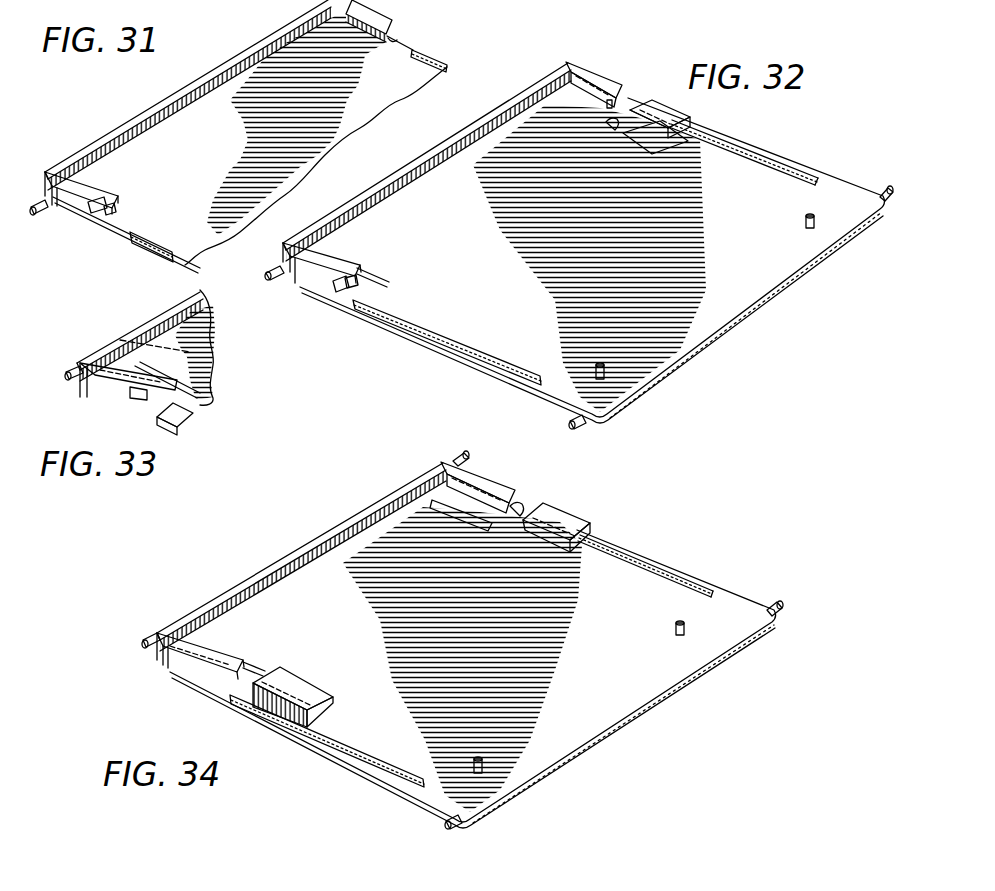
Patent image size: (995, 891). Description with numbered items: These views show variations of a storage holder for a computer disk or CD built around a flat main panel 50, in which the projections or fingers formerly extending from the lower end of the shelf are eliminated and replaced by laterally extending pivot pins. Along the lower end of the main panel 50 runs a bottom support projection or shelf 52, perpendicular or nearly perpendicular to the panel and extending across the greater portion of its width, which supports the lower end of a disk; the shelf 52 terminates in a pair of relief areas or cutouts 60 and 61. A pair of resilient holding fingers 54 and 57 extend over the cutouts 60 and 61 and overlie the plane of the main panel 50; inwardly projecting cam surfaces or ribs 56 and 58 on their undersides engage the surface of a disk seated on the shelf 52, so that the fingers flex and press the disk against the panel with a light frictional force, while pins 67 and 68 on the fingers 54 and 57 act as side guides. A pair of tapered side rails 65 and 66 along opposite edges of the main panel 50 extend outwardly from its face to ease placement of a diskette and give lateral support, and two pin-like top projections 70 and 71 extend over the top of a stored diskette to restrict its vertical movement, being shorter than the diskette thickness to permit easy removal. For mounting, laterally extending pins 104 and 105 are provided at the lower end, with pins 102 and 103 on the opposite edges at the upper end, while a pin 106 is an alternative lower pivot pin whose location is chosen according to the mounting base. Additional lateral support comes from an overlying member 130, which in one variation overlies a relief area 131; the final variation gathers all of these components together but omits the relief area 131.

In FIG. 31, the main panel 50 is at (320, 135).
In FIG. 32, the main panel 50 is at (707, 320).
In FIG. 33, the main panel 50 is at (210, 360).
In FIG. 34, the main panel 50 is at (596, 730).
In FIG. 31, the bottom support projection or shelf 52 is at (127, 137).
In FIG. 32, the bottom support projection or shelf 52 is at (338, 212).
In FIG. 33, the bottom support projection or shelf 52 is at (140, 337).
In FIG. 34, the bottom support projection or shelf 52 is at (277, 563).
In FIG. 32, the resilient holding finger 54 is at (590, 78).
In FIG. 34, the resilient holding finger 54 is at (487, 487).
In FIG. 31, the cam surface or rib 56 is at (367, 42).
In FIG. 31, the resilient holding finger 57 is at (107, 187).
In FIG. 32, the resilient holding finger 57 is at (312, 265).
In FIG. 33, the resilient holding finger 57 is at (130, 387).
In FIG. 34, the resilient holding finger 57 is at (207, 673).
In FIG. 31, the cam surface or rib 58 is at (127, 202).
In FIG. 32, the cam surface or rib 58 is at (352, 287).
In FIG. 33, the cam surface or rib 58 is at (140, 400).
In FIG. 32, the relief area or cutout 60 is at (616, 120).
In FIG. 34, the relief area or cutout 60 is at (513, 507).
In FIG. 32, the relief area or cutout 61 is at (372, 280).
In FIG. 33, the relief area or cutout 61 is at (187, 403).
In FIG. 34, the relief area or cutout 61 is at (230, 693).
In FIG. 31, the tapered side rail 65 is at (443, 58).
In FIG. 32, the tapered side rail 65 is at (787, 158).
In FIG. 34, the tapered side rail 65 is at (653, 560).
In FIG. 31, the tapered side rail 66 is at (157, 240).
In FIG. 32, the tapered side rail 66 is at (482, 362).
In FIG. 34, the tapered side rail 66 is at (385, 773).
In FIG. 31, the pin 67 is at (395, 40).
In FIG. 31, the pin 68 is at (83, 227).
In FIG. 32, the pin 68 is at (342, 283).
In FIG. 33, the pin 68 is at (157, 407).
In FIG. 32, the pin-like top projection 70 is at (805, 223).
In FIG. 34, the pin-like top projection 70 is at (677, 628).
In FIG. 32, the pin-like top projection 71 is at (601, 366).
In FIG. 34, the pin-like top projection 71 is at (480, 757).
In FIG. 34, the pivot pin 102 is at (453, 827).
In FIG. 34, the pivot pin 103 is at (773, 603).
In FIG. 31, the pivot pin 104 is at (35, 212).
In FIG. 32, the pivot pin 104 is at (268, 274).
In FIG. 33, the pivot pin 104 is at (72, 372).
In FIG. 34, the pivot pin 104 is at (150, 642).
In FIG. 34, the pivot pin 105 is at (460, 458).
In FIG. 34, the pivot pin 106 is at (310, 693).
In FIG. 32, the overlying member 130 is at (668, 103).
In FIG. 34, the overlying member 130 is at (563, 517).
In FIG. 32, the relief area 131 is at (662, 152).